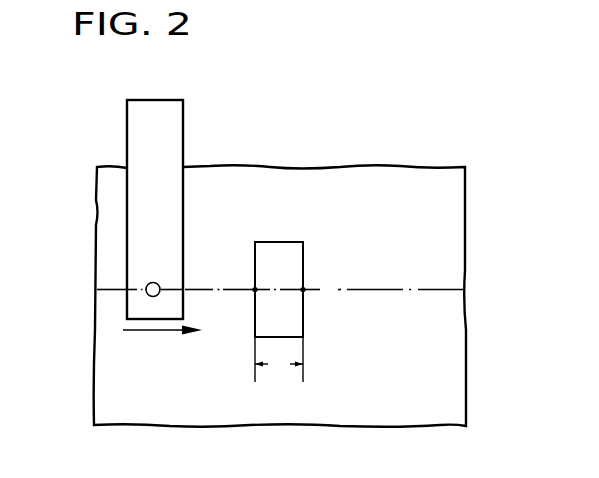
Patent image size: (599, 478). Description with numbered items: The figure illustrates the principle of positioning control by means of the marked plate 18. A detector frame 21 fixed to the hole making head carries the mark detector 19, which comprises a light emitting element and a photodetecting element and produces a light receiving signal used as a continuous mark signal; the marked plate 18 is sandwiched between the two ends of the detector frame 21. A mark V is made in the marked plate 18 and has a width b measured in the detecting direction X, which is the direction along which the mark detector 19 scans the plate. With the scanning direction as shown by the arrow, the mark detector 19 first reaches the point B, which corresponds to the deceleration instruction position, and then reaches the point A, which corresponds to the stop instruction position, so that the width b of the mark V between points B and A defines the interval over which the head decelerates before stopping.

The marked plate 18 is at (443, 352).
The mark detector 19 is at (148, 293).
The detector frame 21 is at (140, 125).
The mark V is at (279, 252).
The detecting direction X is at (383, 288).
The stop instruction position A is at (312, 274).
The deceleration instruction position B is at (242, 274).
The width of the mark b is at (279, 359).